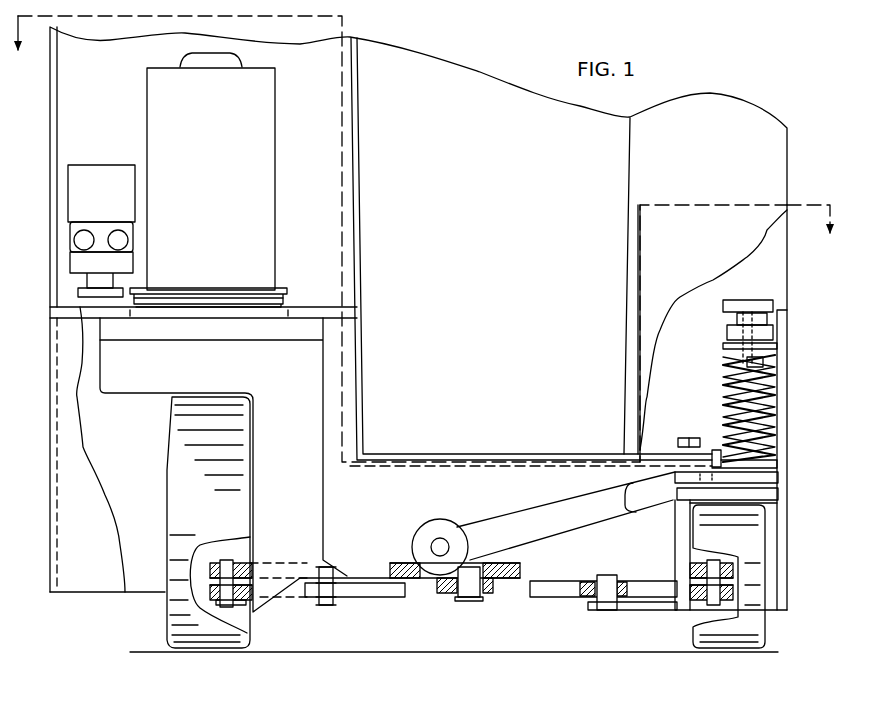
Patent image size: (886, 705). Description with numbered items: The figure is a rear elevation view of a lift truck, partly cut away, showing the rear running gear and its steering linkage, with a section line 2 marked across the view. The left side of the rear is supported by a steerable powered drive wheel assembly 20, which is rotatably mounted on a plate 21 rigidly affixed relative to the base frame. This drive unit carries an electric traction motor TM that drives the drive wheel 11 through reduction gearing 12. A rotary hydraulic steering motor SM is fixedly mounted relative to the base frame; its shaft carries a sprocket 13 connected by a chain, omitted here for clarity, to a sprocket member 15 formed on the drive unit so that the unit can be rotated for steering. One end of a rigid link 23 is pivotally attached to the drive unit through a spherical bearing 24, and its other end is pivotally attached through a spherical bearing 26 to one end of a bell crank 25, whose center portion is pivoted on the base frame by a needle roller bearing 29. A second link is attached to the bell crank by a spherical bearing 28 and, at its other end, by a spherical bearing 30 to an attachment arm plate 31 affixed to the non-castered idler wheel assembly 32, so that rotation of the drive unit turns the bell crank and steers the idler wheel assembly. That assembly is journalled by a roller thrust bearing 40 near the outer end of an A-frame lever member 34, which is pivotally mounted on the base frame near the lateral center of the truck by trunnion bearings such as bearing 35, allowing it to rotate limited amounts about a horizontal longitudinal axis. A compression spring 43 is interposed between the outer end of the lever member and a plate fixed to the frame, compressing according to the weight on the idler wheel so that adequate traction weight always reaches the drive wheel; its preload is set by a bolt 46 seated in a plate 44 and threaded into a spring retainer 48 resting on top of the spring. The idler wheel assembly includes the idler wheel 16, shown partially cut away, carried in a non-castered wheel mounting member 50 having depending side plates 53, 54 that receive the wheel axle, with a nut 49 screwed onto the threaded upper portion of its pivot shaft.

The section line 2- 2 is at (424, 239).
The electric traction motor TM is at (288, 47).
The rotary hydraulic steering motor SM is at (113, 198).
The sprocket 13 is at (78, 291).
The sprocket member 15 is at (186, 289).
The plate 21 is at (298, 305).
The reduction gearing 12 is at (118, 395).
The steerable powered drive wheel assembly 20 is at (150, 412).
The drive wheel 11 is at (163, 478).
The spherical bearing 26 is at (238, 612).
The rigid link 23 is at (305, 604).
The spherical bearing 24 is at (340, 613).
The needle roller bearing 29 is at (457, 599).
The bell crank 25 is at (520, 580).
The trunnion bearing 35 is at (434, 540).
The A-frame lever member 34 is at (495, 514).
The spherical bearing 30 is at (595, 616).
The attachment arm plate 31 is at (640, 615).
The side plate 53 is at (787, 508).
The side plate 54 is at (675, 552).
The non-castered wheel mounting member 50 is at (787, 580).
The idler wheel 16 is at (765, 630).
The spherical bearing 28 is at (728, 616).
The plate 44 is at (768, 300).
The bolt 46 is at (737, 320).
The spring retainer 48 is at (783, 330).
The compression spring 43 is at (775, 400).
The nut 49 is at (714, 448).
The roller thrust bearing 40 is at (703, 432).
The non-castered idler wheel assembly 32 is at (795, 463).